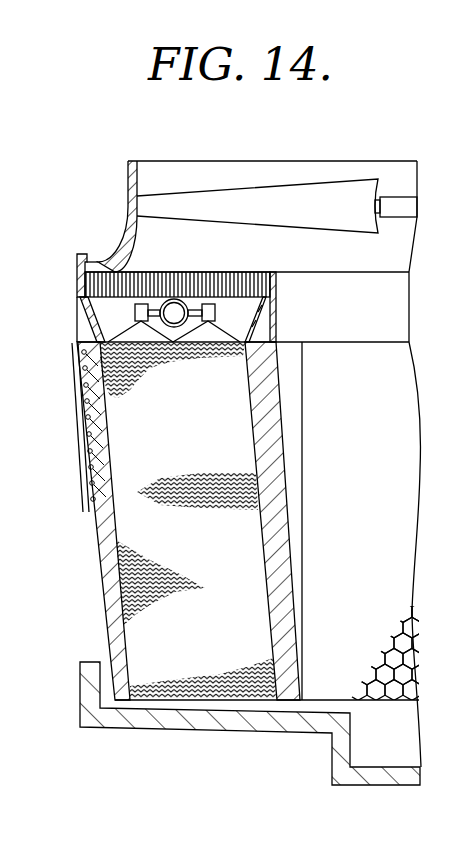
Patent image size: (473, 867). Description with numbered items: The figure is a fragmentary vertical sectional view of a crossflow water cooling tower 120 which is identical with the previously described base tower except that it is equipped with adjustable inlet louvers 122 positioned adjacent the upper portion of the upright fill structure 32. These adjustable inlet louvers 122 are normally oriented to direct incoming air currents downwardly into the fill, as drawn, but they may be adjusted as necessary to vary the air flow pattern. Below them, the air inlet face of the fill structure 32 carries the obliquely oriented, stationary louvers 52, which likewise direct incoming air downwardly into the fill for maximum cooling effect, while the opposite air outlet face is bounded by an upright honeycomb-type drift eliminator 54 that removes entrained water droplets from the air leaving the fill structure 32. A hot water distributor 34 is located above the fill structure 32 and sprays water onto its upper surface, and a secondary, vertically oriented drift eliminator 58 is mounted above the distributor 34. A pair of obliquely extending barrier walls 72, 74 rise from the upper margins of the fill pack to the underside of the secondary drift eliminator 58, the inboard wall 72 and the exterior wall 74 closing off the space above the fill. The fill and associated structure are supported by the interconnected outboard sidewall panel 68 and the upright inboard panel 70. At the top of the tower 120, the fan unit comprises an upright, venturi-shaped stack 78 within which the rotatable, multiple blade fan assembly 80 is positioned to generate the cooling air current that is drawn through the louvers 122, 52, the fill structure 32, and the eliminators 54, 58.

The tower 120 is at (381, 142).
The venturi-shaped stack 78 is at (128, 186).
The fan assembly 80 is at (319, 194).
The secondary drift eliminators 58 is at (243, 275).
The inboard panels 70 is at (76, 325).
The exterior barrier wall 74 is at (105, 304).
The outboard sidewall panels 68 is at (273, 300).
The barrier wall 72 is at (258, 333).
The hot water distributors 34 is at (163, 290).
The fill structure 32 is at (176, 520).
The louvers 52 is at (115, 598).
The drift eliminators 54 is at (276, 508).
The adjustable inlet louvers 122 is at (88, 498).